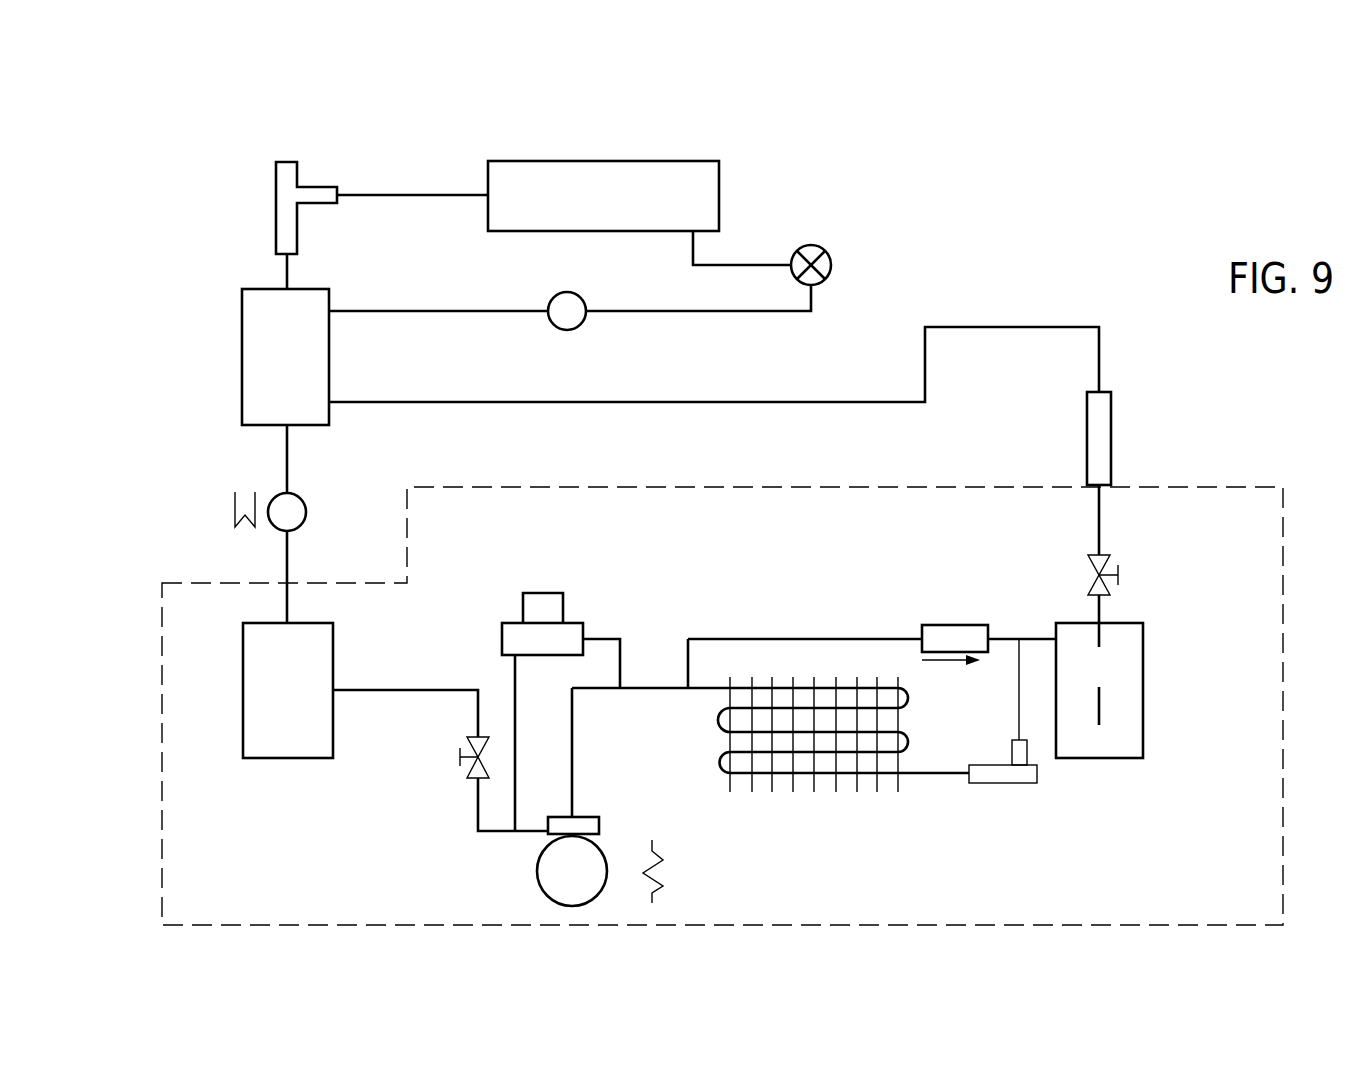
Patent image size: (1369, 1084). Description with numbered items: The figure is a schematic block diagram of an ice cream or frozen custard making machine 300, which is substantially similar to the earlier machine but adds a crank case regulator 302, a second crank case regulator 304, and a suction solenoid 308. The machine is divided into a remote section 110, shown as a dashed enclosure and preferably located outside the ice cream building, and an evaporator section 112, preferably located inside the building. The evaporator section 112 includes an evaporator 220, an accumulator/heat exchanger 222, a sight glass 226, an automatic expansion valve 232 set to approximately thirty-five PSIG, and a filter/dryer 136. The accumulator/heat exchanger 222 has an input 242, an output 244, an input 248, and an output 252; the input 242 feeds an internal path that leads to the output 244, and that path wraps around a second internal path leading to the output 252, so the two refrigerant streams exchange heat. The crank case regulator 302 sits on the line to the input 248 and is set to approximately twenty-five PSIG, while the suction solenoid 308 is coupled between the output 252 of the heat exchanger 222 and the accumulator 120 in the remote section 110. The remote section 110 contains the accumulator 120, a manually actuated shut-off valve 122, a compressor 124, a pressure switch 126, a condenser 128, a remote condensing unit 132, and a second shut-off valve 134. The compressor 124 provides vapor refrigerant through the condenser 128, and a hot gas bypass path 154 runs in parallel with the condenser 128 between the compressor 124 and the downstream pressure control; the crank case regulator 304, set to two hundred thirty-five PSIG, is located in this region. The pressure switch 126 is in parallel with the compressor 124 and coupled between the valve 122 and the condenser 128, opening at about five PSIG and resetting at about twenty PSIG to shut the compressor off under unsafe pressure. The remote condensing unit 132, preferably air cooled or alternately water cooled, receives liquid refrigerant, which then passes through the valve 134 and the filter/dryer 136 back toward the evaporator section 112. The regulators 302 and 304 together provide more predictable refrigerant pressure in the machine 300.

The ice cream or frozen custard making machine 300 is at (786, 148).
The crank case regulator 302 is at (275, 207).
The evaporator 220 is at (487, 184).
The automatic expansion valve 232 is at (821, 284).
The input 248 is at (284, 288).
The accumulator/heat exchanger 222 is at (330, 294).
The output 244 is at (330, 308).
The sight glass 226 is at (565, 330).
The input 242 is at (330, 406).
The filter/dryer 136 is at (1112, 445).
The output 252 is at (283, 432).
The suction solenoid 308 is at (272, 530).
The evaporator section 112 is at (1142, 208).
The remote section 110 is at (1240, 486).
The accumulator 120 is at (334, 653).
The valve 122 is at (460, 773).
The compressor 124 is at (540, 887).
The pressure switch 126 is at (565, 604).
The condenser 128 is at (789, 666).
The hot gas bypass path 154 is at (822, 640).
The crank case regulator 304 is at (1003, 784).
The valve 134 is at (1094, 558).
The remote condensing unit 132 is at (1143, 635).